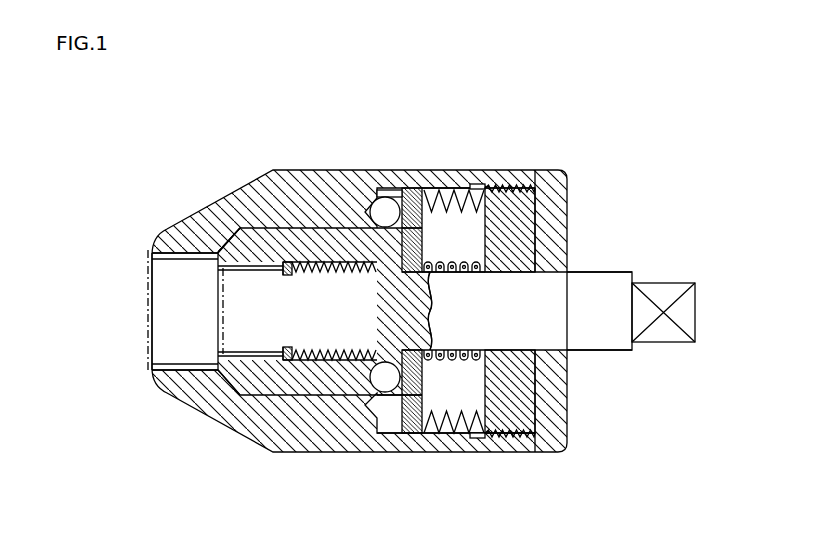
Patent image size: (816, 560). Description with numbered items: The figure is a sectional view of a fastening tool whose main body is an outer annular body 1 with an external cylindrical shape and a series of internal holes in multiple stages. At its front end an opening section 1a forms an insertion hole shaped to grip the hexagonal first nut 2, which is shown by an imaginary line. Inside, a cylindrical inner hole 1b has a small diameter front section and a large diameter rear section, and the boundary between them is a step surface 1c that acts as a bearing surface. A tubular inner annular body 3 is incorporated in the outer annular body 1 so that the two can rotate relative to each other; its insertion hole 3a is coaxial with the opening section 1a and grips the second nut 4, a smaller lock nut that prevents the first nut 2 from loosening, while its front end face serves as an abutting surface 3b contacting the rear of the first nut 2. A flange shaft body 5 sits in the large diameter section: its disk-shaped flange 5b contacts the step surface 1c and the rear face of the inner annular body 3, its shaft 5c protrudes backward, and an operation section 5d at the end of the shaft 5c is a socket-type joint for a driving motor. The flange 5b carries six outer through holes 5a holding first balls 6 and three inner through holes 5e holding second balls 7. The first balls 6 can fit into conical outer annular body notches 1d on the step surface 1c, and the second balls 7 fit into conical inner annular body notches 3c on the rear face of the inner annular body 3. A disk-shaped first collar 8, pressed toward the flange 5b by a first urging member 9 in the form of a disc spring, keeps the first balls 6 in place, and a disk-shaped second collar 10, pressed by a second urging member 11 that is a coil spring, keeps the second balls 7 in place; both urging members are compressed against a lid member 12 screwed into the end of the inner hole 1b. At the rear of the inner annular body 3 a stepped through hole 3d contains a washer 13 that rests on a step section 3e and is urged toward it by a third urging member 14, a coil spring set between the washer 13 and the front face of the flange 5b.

The outer annular body 1 is at (311, 165).
The opening section 1a is at (165, 270).
The inner hole 1b is at (452, 200).
The step surface 1c is at (385, 437).
The outer annular body notches 1d is at (393, 437).
The first nut 2 is at (148, 320).
The inner annular body 3 is at (228, 386).
The insertion hole 3a is at (230, 268).
The abutting surface 3b is at (212, 250).
The inner annular body notches 3c is at (422, 228).
The through hole 3d is at (327, 273).
The step section 3e is at (285, 326).
The second nut 4 is at (223, 333).
The flange shaft body 5 is at (593, 352).
The through holes 5a is at (376, 196).
The flange 5b is at (405, 250).
The shaft 5c is at (600, 272).
The operation section 5d is at (663, 283).
The through holes 5e is at (432, 345).
The first balls 6 is at (385, 197).
The second balls 7 is at (413, 435).
The first collar 8 is at (411, 188).
The first urging member 9 is at (492, 190).
The second collar 10 is at (460, 437).
The second urging member 11 is at (505, 440).
The lid member 12 is at (560, 194).
The washer 13 is at (288, 362).
The third urging member 14 is at (336, 352).